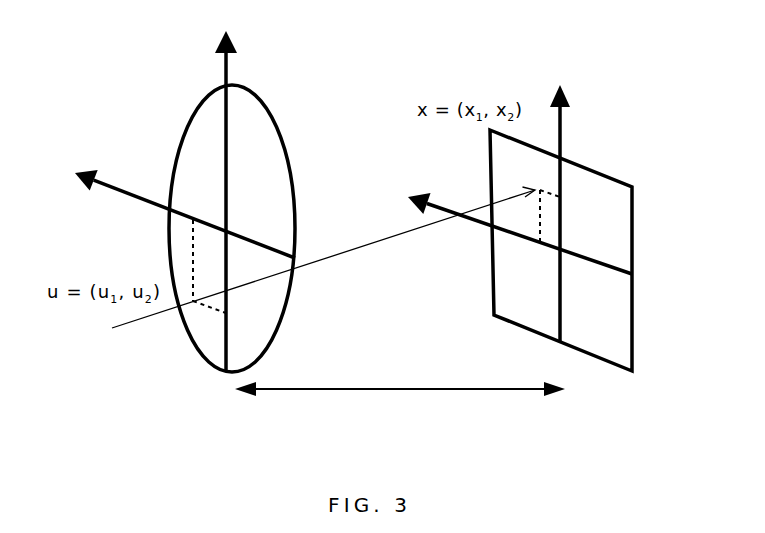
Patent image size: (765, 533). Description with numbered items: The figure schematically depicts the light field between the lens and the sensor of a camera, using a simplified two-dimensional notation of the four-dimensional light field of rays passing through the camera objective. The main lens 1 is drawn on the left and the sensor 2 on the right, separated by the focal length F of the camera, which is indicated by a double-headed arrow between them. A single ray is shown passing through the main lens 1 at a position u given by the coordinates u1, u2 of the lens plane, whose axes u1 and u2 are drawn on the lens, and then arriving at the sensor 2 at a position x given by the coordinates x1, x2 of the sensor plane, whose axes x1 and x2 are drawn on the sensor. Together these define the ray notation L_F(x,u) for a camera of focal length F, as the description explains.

The lens 1 is at (195, 350).
The image sensor plane 2 is at (603, 360).
The focal length F is at (400, 374).
The first lens position coordinate u1 is at (185, 202).
The second lens position coordinate u2 is at (237, 195).
The first sensor position coordinate x1 is at (520, 224).
The second sensor position coordinate x2 is at (571, 210).